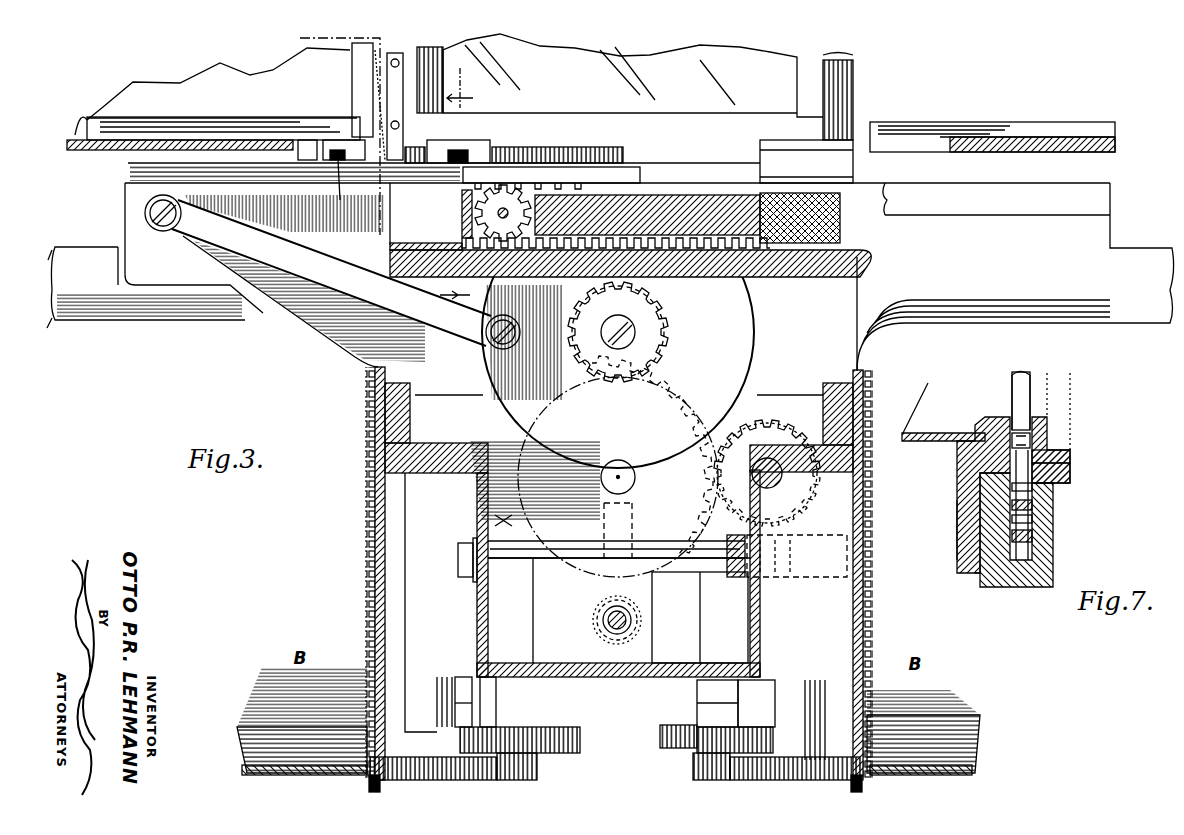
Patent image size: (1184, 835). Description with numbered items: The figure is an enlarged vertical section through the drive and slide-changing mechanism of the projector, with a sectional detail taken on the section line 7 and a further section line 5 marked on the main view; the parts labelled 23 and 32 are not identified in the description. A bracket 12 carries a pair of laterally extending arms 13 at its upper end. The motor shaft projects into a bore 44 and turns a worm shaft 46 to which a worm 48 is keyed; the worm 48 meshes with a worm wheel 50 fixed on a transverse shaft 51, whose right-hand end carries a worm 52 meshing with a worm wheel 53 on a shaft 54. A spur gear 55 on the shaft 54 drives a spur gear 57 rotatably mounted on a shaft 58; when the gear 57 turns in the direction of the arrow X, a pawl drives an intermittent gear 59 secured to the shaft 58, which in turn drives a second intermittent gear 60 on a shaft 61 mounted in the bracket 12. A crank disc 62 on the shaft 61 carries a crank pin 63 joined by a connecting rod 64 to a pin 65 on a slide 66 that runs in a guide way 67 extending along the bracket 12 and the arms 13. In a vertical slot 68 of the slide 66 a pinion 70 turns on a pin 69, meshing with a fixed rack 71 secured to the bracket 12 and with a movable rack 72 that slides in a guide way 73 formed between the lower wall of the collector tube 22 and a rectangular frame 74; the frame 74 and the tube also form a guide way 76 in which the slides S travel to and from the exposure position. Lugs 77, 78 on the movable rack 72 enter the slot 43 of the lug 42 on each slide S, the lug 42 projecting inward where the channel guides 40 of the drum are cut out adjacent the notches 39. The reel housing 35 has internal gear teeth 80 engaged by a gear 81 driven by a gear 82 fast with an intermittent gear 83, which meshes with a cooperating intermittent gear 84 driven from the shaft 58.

In FIG. 3, the section line 5 is at (342, 131).
In FIG. 3, the section line 7— 7 is at (450, 187).
In FIG. 3, the bracket 12 is at (385, 410).
In FIG. 3, the laterally extending arms 13 is at (162, 282).
In FIG. 7, the laterally extending arms 13 is at (1004, 578).
In FIG. 7, the collector tube 22 is at (932, 440).
In FIG. 7, the body portion 23 is at (965, 568).
In FIG. 3, the frame end 32 is at (94, 322).
In FIG. 3, the reel housing 35 is at (268, 773).
In FIG. 3, the notches 39 is at (290, 140).
In FIG. 3, the channel shaped guides 40 is at (1063, 130).
In FIG. 3, the lug 42 is at (302, 142).
In FIG. 7, the lug 42 is at (1033, 442).
In FIG. 3, the slot 43 is at (327, 142).
In FIG. 3, the bore 44 is at (634, 636).
In FIG. 3, the worm shaft 46 is at (603, 628).
In FIG. 3, the worm 48 is at (637, 624).
In FIG. 3, the worm wheel 50 is at (655, 590).
In FIG. 3, the transverse shaft 51 is at (714, 568).
In FIG. 3, the worm 52 is at (780, 590).
In FIG. 3, the worm wheel 53 is at (788, 428).
In FIG. 3, the shaft 54 is at (782, 480).
In FIG. 3, the spur gear 55 is at (766, 422).
In FIG. 3, the spur gear 57 is at (702, 392).
In FIG. 3, the shaft 58 is at (628, 485).
In FIG. 3, the intermittent gear 59 is at (618, 477).
In FIG. 3, the second intermittent gear 60 is at (672, 348).
In FIG. 3, the shaft 61 is at (640, 328).
In FIG. 3, the crank disc 62 is at (510, 408).
In FIG. 3, the crank pin 63 is at (498, 340).
In FIG. 3, the connecting rod 64 is at (432, 312).
In FIG. 3, the pin 65 is at (148, 212).
In FIG. 3, the slide 66 is at (305, 272).
In FIG. 7, the slide 66 is at (985, 488).
In FIG. 3, the guide way 67 is at (848, 237).
In FIG. 7, the guide way 67 is at (975, 537).
In FIG. 3, the slot 68 is at (462, 262).
In FIG. 7, the slot 68 is at (1036, 490).
In FIG. 3, the pin 69 is at (462, 222).
In FIG. 7, the pin 69 is at (1036, 506).
In FIG. 3, the pinion 70 is at (497, 213).
In FIG. 7, the pinion 70 is at (1036, 520).
In FIG. 3, the fixed rack 71 is at (773, 268).
In FIG. 7, the fixed rack 71 is at (1036, 540).
In FIG. 3, the movable rack 72 is at (590, 181).
In FIG. 7, the movable rack 72 is at (1058, 472).
In FIG. 3, the guide way 73 is at (542, 172).
In FIG. 7, the guide way 73 is at (1072, 462).
In FIG. 7, the rectangular frame 74 is at (1063, 405).
In FIG. 3, the guide way 76 is at (848, 130).
In FIG. 7, the guide way 76 is at (1012, 420).
In FIG. 3, the lug 77 is at (341, 185).
In FIG. 3, the lug 78 is at (465, 148).
In FIG. 3, the gear teeth 80 is at (370, 778).
In FIG. 3, the gear 81 is at (490, 772).
In FIG. 3, the gear 82 is at (535, 770).
In FIG. 3, the intermittent gear 83 is at (548, 750).
In FIG. 3, the intermittent gear 84 is at (660, 730).
In FIG. 3, the slide S is at (232, 80).
In FIG. 7, the slide S is at (1033, 372).
In FIG. 3, the arrow X is at (503, 520).